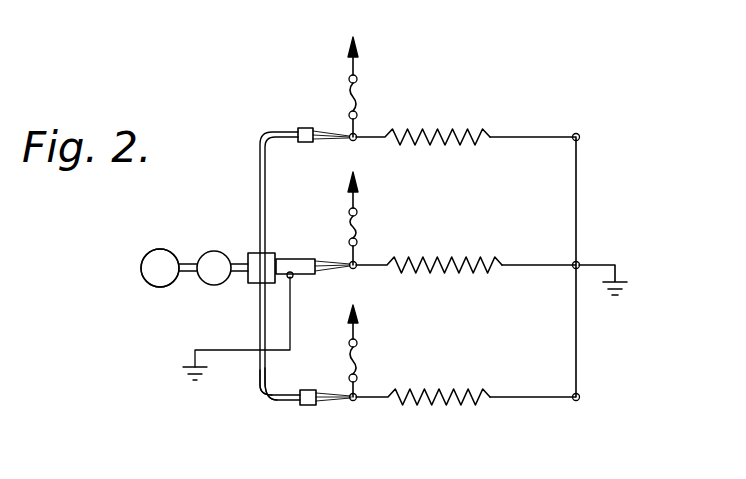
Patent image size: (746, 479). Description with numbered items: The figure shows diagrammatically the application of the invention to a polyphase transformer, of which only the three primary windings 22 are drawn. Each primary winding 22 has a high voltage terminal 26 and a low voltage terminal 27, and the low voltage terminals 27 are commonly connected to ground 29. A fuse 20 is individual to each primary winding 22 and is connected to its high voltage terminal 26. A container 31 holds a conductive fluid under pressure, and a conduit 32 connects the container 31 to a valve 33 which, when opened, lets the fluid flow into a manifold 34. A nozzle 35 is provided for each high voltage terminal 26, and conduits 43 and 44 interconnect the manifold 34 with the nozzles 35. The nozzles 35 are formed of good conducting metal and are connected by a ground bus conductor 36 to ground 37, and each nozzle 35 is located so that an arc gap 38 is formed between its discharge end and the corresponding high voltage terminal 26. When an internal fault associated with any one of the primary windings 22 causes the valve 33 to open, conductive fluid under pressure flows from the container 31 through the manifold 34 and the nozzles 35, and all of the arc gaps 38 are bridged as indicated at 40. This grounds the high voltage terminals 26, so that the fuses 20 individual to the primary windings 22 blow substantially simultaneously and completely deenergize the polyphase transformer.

The fuse 20 is at (358, 95).
The primary winding 22 is at (470, 128).
The high voltage terminal 26 is at (358, 140).
The low voltage terminal 27 is at (580, 137).
The ground 29 is at (618, 277).
The container 31 is at (142, 258).
The conduit 32 is at (186, 281).
The valve 33 is at (218, 250).
The manifold 34 is at (238, 278).
The nozzle 35 is at (298, 128).
The ground bus conductor 36 is at (230, 347).
The ground 37 is at (182, 362).
The arc gap 38 is at (333, 120).
The bridging of arc gap 40 is at (340, 142).
The conduit 43 is at (260, 378).
The conduit 44 is at (260, 190).